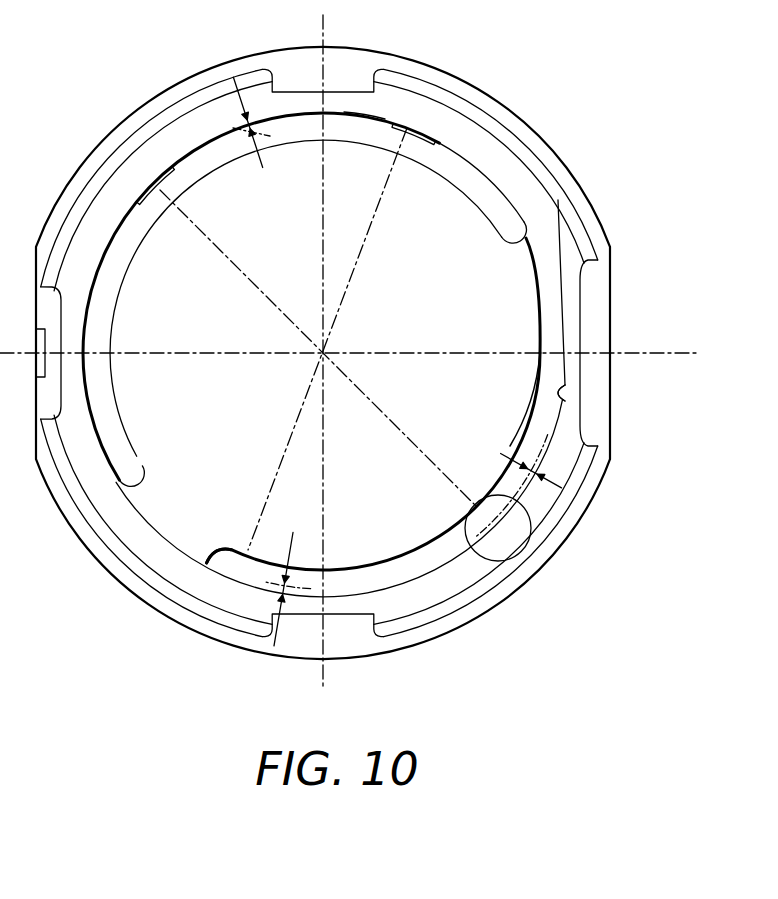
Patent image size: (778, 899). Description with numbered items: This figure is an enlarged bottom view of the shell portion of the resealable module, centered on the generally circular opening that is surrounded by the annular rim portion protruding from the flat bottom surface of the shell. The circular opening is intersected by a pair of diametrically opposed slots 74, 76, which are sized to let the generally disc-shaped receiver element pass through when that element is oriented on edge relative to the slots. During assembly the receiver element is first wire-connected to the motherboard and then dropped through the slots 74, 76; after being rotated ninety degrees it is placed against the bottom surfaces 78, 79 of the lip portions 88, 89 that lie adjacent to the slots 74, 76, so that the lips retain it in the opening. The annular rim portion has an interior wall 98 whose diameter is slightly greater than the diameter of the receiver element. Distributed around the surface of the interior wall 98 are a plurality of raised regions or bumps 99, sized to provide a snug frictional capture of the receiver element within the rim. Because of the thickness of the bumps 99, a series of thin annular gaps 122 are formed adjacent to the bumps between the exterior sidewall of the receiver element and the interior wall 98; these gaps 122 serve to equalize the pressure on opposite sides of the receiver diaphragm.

The slot 74 is at (491, 188).
The slot 76 is at (160, 509).
The bottom surface 78 is at (535, 268).
The bottom surface 79 is at (378, 128).
The lip portion 88 is at (538, 368).
The lip portion 89 is at (206, 183).
The interior wall 98 is at (580, 393).
The raised regions or bumps 99 is at (413, 137).
The thin annular gaps 122 is at (255, 143).